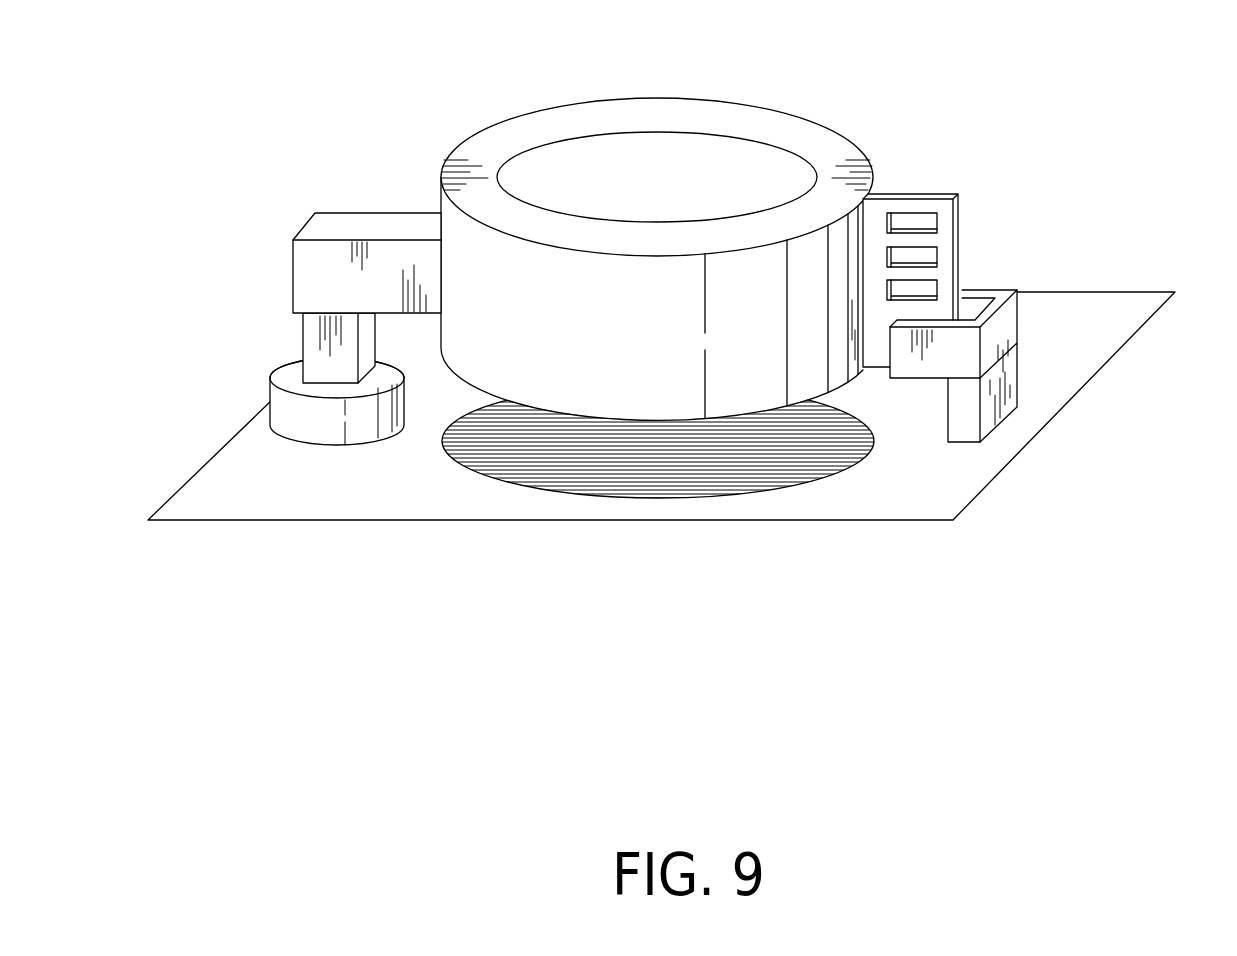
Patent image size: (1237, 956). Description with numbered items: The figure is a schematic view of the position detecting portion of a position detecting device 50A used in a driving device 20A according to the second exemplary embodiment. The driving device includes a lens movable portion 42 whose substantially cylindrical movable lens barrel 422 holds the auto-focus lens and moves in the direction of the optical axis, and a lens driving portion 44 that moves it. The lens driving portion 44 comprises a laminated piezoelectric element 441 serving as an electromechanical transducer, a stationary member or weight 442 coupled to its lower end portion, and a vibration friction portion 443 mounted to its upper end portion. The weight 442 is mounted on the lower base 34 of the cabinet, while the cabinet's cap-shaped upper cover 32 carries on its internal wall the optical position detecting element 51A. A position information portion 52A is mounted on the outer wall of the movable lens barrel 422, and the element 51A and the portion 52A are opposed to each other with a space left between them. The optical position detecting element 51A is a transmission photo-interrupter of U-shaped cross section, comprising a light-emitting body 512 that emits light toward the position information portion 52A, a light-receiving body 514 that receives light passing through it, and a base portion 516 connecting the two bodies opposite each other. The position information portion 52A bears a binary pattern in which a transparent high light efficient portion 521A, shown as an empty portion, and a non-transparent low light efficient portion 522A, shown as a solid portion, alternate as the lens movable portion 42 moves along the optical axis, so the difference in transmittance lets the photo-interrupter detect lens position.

The driving device 20A is at (659, 326).
The lens movable portion 42 is at (670, 333).
The movable lens barrel 422 is at (583, 393).
The lens driving portion 44 is at (265, 315).
The vibration friction portion 443 is at (332, 227).
The laminated piezoelectric element 441 is at (312, 346).
The stationary member (weight) 442 is at (288, 412).
The position detecting device 50A is at (1012, 326).
The position information portion 52A is at (964, 204).
The high light efficient portion 521A is at (900, 288).
The low light efficient portion 522A is at (897, 240).
The optical position detecting element 51A is at (1012, 404).
The light-emitting body 512 is at (917, 358).
The light-receiving body 514 is at (988, 287).
The base portion 516 is at (1002, 325).
The upper cover 32 is at (957, 420).
The lower base 34 is at (365, 522).